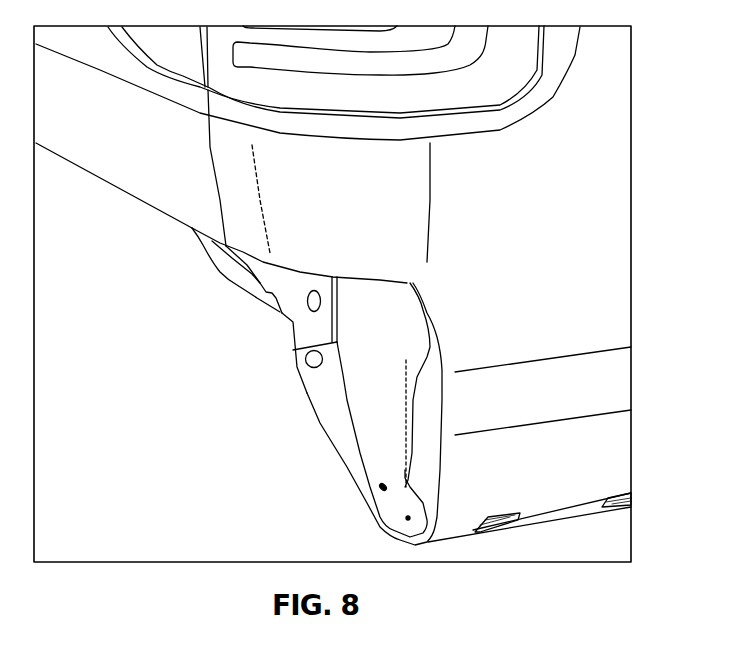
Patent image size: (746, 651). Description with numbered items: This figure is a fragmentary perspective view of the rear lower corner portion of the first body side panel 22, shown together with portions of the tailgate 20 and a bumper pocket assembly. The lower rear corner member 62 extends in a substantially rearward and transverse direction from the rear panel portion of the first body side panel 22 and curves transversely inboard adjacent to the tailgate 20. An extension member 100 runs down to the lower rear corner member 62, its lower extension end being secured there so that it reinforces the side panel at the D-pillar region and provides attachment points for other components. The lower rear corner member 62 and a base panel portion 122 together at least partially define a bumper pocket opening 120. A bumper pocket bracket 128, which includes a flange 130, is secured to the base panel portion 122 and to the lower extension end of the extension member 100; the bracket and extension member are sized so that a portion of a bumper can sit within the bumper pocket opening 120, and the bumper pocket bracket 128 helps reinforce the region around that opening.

The tailgate 20 is at (148, 143).
The first body side panel 22 is at (597, 100).
The lower rear corner member 62 is at (292, 233).
The extension member 100 is at (293, 322).
The bumper pocket opening 120 is at (422, 475).
The base panel portion 122 is at (595, 398).
The bumper pocket bracket 128 is at (377, 373).
The flange 130 is at (307, 393).